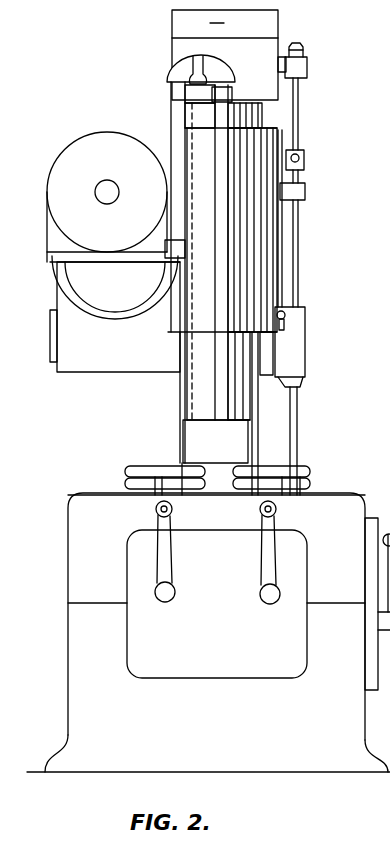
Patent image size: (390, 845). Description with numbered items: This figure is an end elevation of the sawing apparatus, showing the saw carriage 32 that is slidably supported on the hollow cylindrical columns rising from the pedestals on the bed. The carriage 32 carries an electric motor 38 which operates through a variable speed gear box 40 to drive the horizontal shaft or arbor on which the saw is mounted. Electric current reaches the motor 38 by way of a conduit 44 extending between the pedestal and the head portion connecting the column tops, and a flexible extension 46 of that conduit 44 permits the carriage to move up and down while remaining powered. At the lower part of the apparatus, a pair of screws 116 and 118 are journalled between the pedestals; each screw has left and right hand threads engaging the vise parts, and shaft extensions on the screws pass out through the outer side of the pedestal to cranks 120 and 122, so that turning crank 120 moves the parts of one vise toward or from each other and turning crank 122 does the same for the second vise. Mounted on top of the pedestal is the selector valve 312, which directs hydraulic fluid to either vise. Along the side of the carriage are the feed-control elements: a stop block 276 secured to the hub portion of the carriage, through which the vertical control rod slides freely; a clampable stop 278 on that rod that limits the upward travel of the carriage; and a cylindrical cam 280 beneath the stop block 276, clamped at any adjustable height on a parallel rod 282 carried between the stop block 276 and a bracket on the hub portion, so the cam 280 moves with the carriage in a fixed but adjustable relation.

The carriage 32 is at (248, 278).
The electric motor 38 is at (62, 168).
The variable speed gear box 40 is at (70, 338).
The conduit 44 is at (220, 162).
The flexible extension 46 is at (118, 306).
The screw 116 is at (167, 600).
The screw 118 is at (270, 600).
The crank 120 is at (162, 562).
The crank 122 is at (277, 566).
The stop block 276 is at (305, 196).
The stop 278 is at (303, 165).
The cylindrical cam 280 is at (296, 350).
The rod 282 is at (284, 281).
The selector valve 312 is at (197, 447).